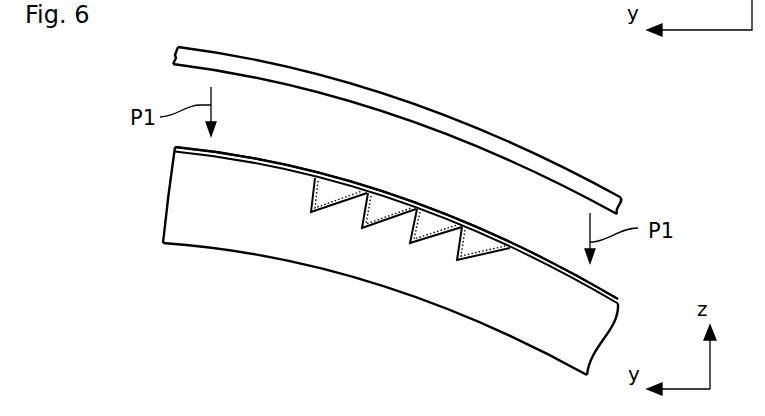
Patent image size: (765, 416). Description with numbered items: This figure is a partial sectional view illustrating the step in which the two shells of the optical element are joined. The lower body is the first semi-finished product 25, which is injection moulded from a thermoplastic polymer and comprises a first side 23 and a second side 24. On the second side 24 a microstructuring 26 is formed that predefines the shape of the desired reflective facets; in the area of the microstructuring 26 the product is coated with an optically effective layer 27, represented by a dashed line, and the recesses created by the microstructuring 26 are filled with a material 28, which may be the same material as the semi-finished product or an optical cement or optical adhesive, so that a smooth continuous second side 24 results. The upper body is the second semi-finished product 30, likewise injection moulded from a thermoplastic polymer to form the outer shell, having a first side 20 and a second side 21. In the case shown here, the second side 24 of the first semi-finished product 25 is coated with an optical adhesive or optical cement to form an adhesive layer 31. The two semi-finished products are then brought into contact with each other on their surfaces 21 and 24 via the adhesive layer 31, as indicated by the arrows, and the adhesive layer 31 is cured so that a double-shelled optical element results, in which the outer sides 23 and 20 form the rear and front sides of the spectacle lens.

The first side of second semi-finished product 20 is at (343, 130).
The second side of second semi-finished product 21 is at (256, 80).
The first side of first semi-finished product 23 is at (199, 250).
The second side of first semi-finished product 24 is at (545, 262).
The first semi-finished product 25 is at (341, 261).
The microstructuring 26 is at (425, 253).
The optically effective layer 27 is at (490, 258).
The filling material 28 is at (337, 197).
The second semi-finished product 30 is at (177, 53).
The adhesive layer 31 is at (173, 148).